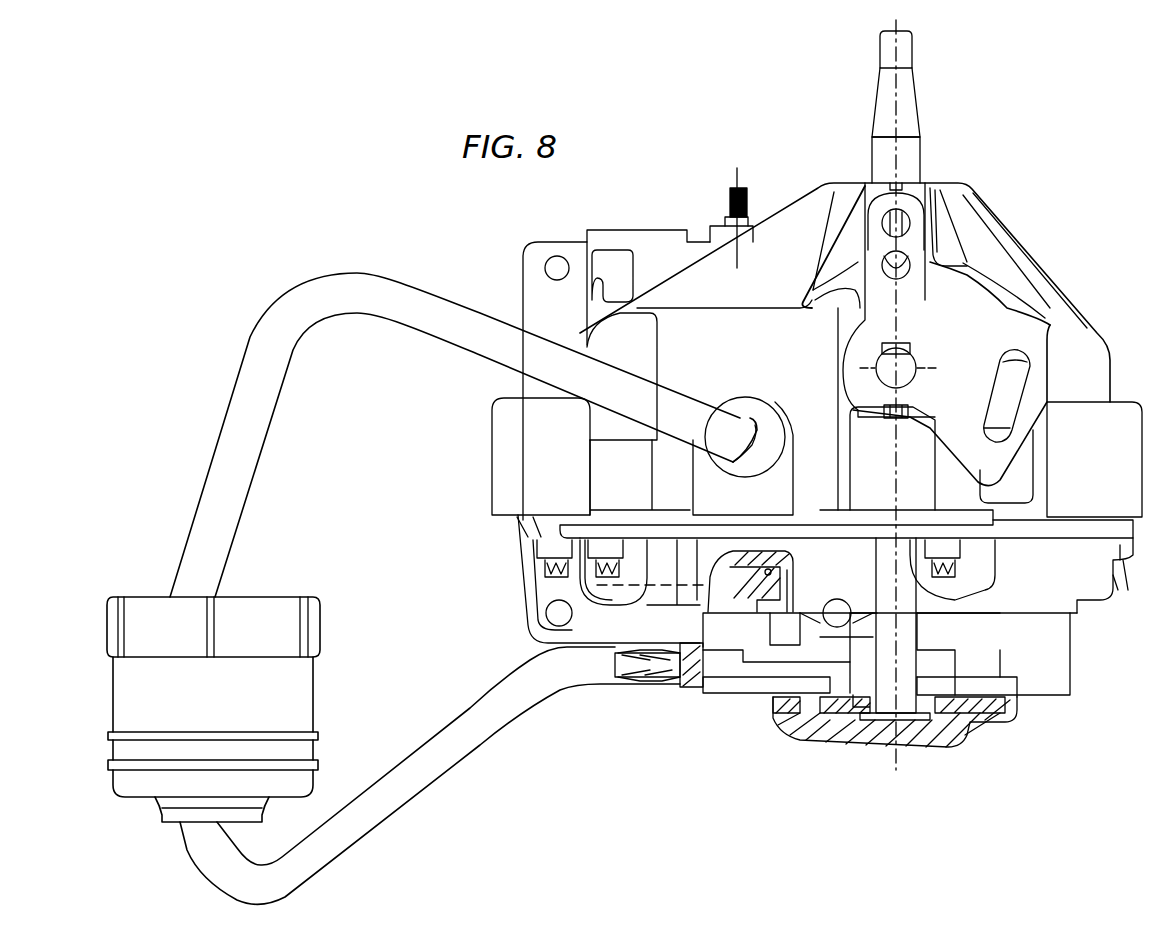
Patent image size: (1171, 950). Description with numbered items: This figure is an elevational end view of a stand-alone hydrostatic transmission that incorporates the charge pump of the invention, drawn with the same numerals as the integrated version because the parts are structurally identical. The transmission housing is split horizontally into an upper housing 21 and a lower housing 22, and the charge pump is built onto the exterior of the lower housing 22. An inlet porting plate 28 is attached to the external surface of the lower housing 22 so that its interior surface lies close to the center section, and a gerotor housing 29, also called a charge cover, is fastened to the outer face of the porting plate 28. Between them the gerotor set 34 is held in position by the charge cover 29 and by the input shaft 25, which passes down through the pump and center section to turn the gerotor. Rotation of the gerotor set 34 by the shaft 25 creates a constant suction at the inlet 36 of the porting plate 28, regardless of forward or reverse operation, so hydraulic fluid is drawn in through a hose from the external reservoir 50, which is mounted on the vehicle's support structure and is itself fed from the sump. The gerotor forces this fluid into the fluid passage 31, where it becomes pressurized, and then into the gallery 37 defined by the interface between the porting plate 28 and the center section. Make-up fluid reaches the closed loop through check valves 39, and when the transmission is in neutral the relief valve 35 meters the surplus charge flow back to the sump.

The upper housing 21 is at (1103, 470).
The lower housing 22 is at (1080, 573).
The input shaft 25 is at (920, 110).
The inlet porting plate 28 is at (1054, 653).
The gerotor housing 29 is at (948, 745).
The fluid passage 31 is at (960, 667).
The gerotor set 34 is at (826, 715).
The relief valve 35 is at (750, 595).
The inlet 36 is at (642, 683).
The gallery 37 is at (947, 622).
The check valves 39 is at (808, 630).
The external reservoir 50 is at (233, 592).